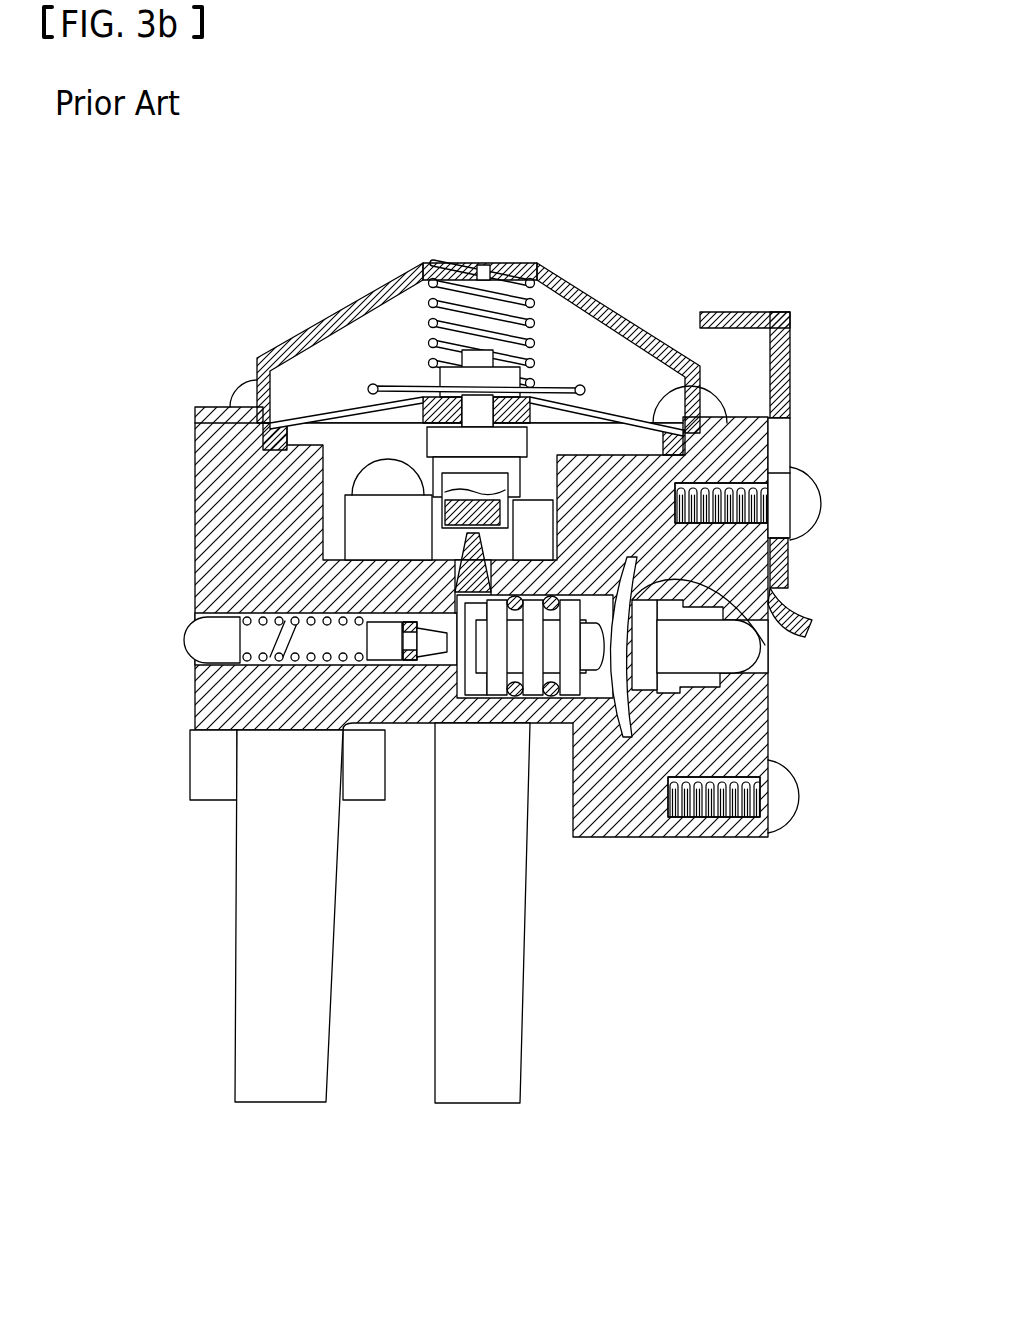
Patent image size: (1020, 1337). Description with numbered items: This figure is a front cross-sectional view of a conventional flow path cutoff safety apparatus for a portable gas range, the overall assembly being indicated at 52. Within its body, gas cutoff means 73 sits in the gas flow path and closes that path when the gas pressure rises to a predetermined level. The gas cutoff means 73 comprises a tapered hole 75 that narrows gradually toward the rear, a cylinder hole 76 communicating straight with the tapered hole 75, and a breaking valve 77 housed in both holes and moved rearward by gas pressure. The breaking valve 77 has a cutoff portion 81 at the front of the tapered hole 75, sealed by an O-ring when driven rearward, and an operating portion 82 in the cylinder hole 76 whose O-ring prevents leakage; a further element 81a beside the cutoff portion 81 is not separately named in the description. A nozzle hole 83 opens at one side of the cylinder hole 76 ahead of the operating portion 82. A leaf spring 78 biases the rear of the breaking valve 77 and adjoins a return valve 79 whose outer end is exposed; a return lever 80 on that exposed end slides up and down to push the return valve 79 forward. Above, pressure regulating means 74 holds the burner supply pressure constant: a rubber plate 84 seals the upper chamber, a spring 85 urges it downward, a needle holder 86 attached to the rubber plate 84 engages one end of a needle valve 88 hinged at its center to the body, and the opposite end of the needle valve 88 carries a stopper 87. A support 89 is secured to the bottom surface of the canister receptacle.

The pressure regulator 52 is at (182, 373).
The gas cutoff means 73 is at (527, 698).
The pressure regulating means 74 is at (568, 330).
The tapered hole 75 is at (480, 617).
The cylinder hole 76 is at (595, 698).
The breaking valve 77 is at (510, 660).
The leaf spring 78 is at (730, 590).
The return valve 79 is at (730, 646).
The return lever 80 is at (787, 338).
The cutoff portion 81 is at (405, 668).
The return spring 81a is at (270, 618).
The operating portion 82 is at (472, 640).
The nozzle hole 83 is at (357, 398).
The rubber plate 84 is at (700, 391).
The spring 85 is at (512, 300).
The needle holder 86 is at (362, 493).
The stopper 87 is at (600, 455).
The needle valve 88 is at (523, 492).
The support 89 is at (308, 1070).